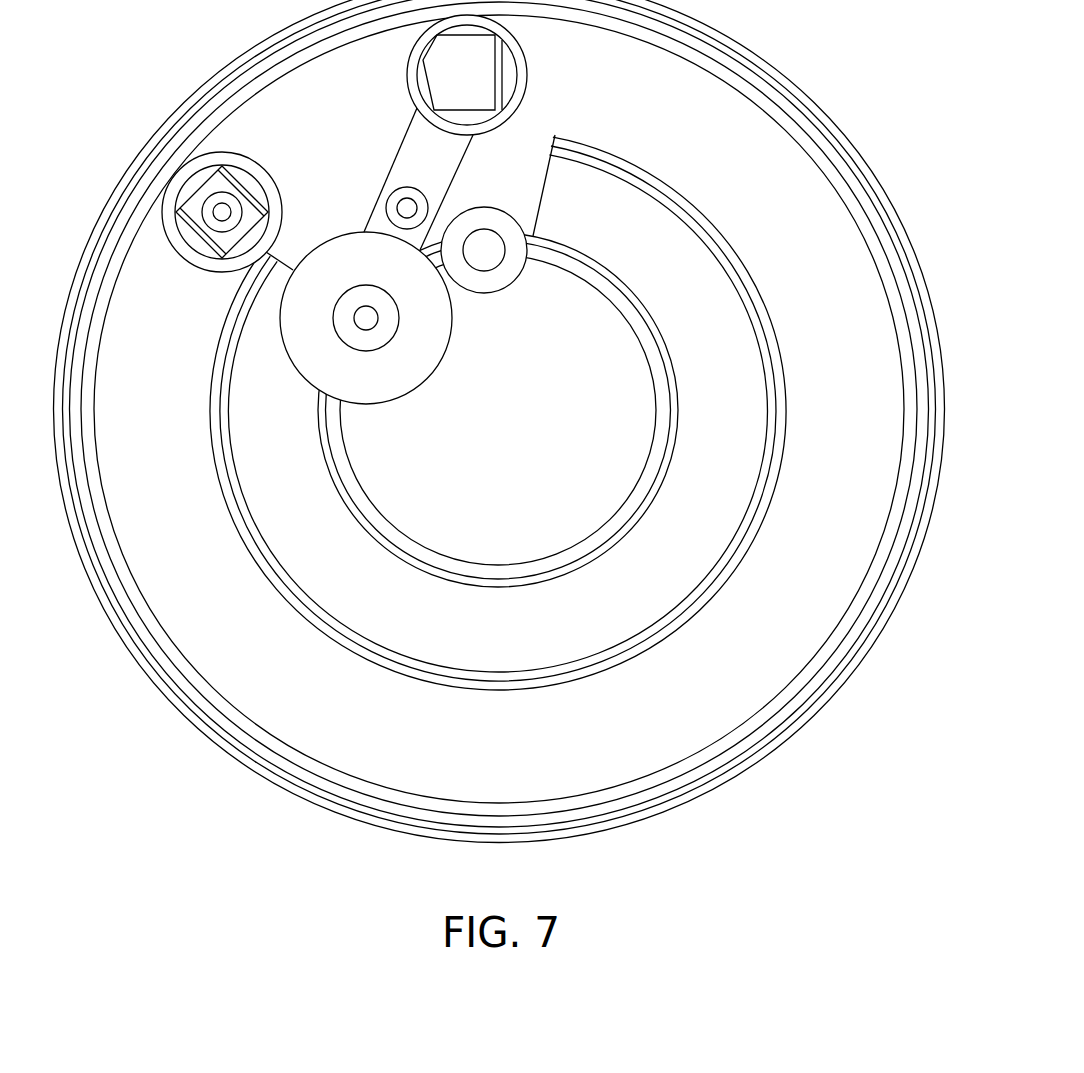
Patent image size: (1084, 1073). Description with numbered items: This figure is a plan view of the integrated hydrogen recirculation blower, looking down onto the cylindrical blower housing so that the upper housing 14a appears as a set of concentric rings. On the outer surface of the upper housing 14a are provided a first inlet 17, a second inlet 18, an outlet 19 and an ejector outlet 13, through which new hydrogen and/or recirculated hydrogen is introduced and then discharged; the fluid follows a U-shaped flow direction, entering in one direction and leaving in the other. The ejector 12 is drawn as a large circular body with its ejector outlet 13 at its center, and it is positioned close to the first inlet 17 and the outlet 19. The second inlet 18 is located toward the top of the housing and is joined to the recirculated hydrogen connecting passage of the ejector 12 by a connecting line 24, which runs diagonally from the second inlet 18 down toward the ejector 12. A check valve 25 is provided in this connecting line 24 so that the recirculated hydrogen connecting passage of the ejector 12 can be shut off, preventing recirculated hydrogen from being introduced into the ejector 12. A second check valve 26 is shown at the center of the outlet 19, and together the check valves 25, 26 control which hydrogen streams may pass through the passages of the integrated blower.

The ejector 12 is at (299, 389).
The ejector outlet 13 is at (400, 317).
The upper housing 14a is at (790, 722).
The first inlet 17 is at (482, 293).
The second inlet 18 is at (542, 76).
The outlet 19 is at (289, 168).
The connecting line 24 is at (412, 150).
The check valve 25 is at (412, 188).
The check valve 26 is at (243, 220).